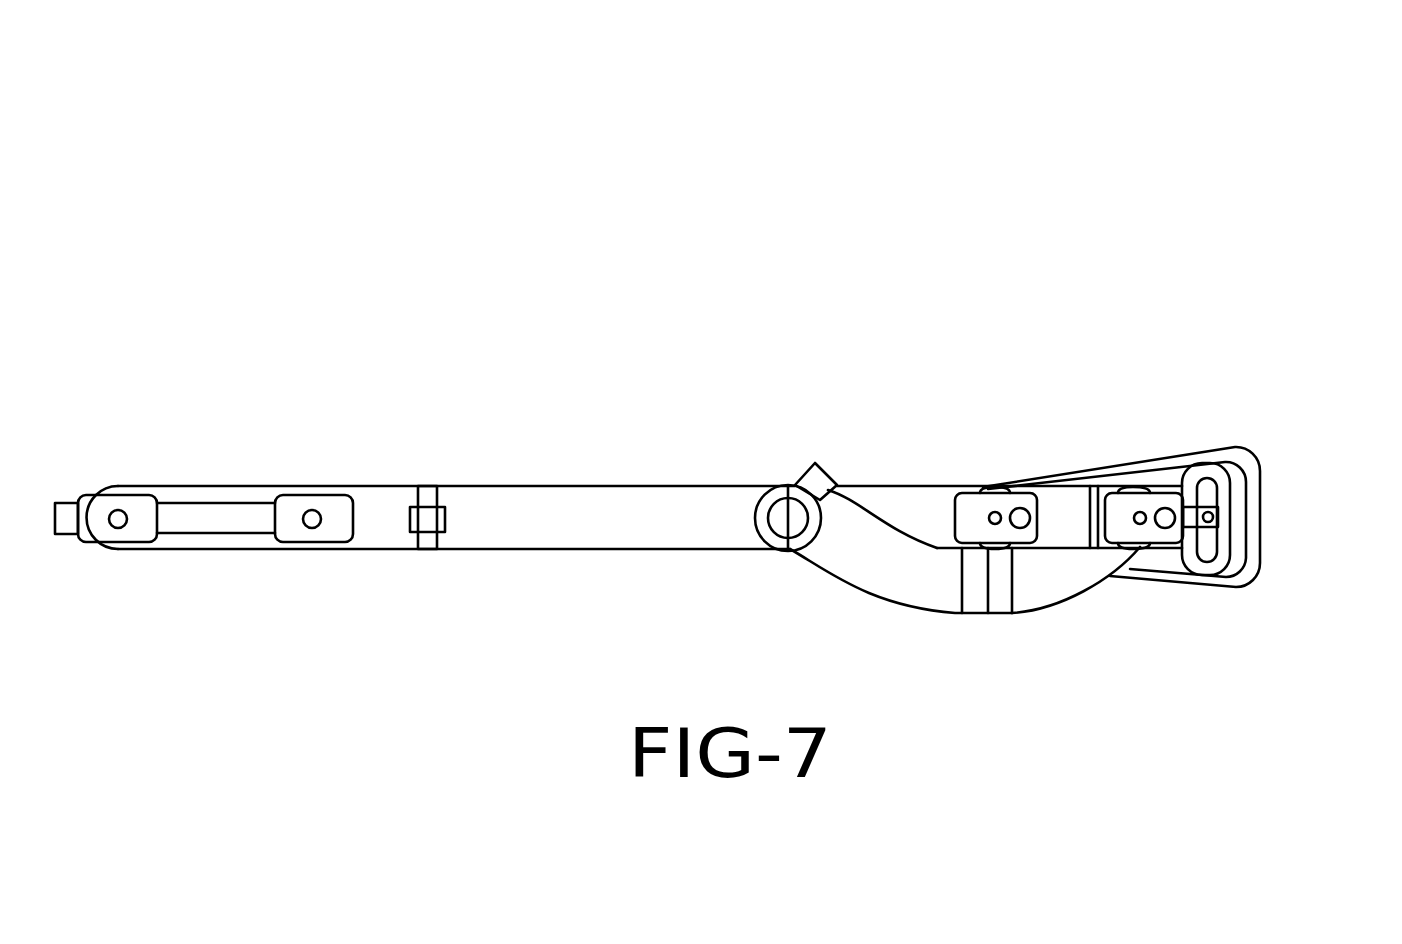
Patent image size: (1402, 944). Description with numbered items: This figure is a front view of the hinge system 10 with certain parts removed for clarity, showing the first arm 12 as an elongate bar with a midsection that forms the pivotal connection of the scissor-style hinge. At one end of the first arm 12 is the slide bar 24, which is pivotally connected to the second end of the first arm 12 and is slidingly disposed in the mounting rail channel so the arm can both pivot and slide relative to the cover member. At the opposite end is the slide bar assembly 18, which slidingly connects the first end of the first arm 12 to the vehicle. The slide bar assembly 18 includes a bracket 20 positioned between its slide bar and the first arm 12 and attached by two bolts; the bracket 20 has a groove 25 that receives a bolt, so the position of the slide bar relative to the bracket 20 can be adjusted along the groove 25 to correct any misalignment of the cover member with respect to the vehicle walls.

The hinge system 10 is at (634, 334).
The first arm 12 is at (1052, 583).
The slide bar assembly 18 is at (1145, 372).
The bracket 20 is at (1240, 478).
The slide bar 24 is at (203, 517).
The groove 25 is at (1207, 580).